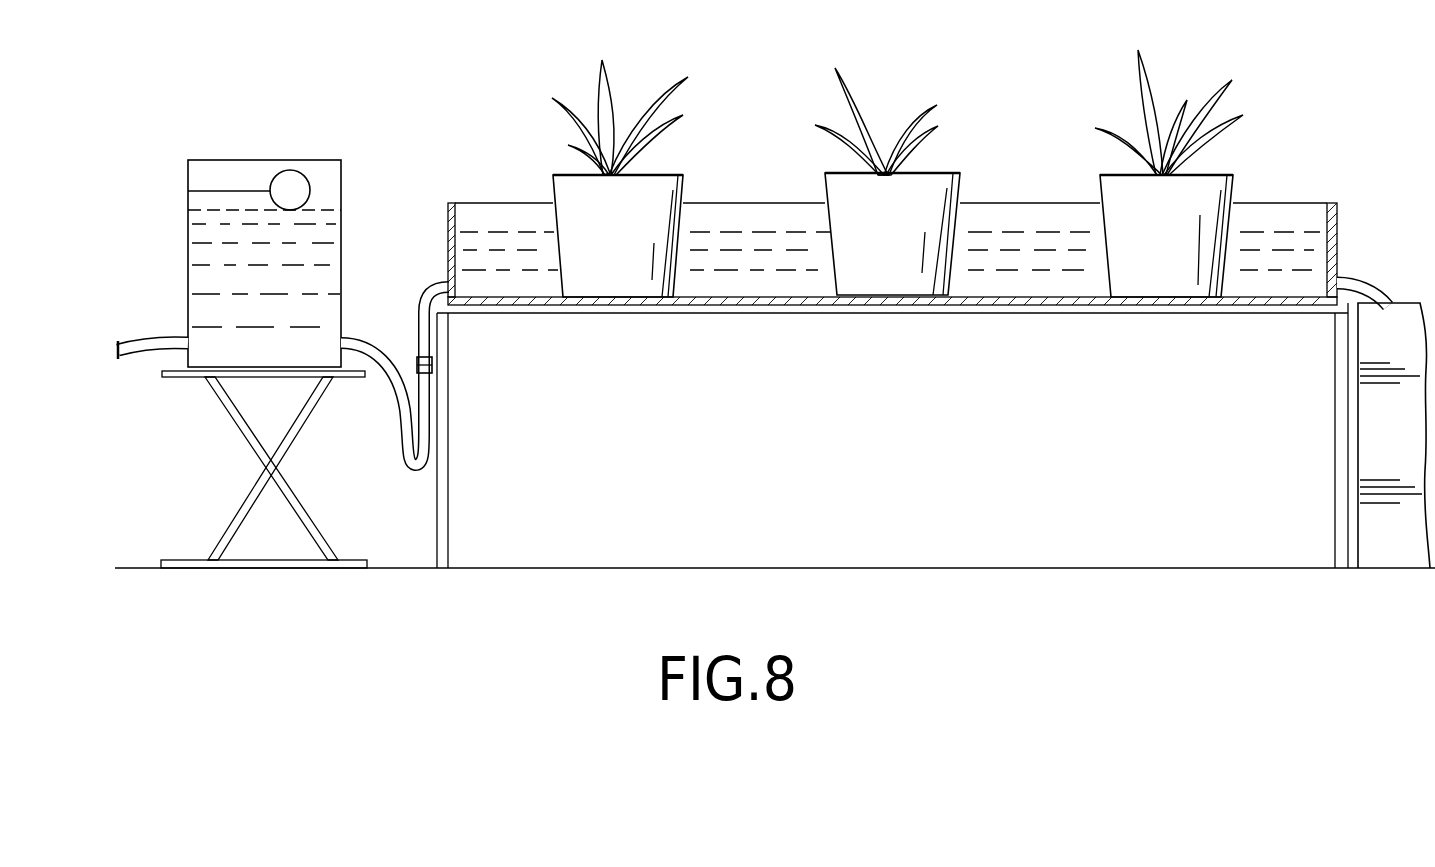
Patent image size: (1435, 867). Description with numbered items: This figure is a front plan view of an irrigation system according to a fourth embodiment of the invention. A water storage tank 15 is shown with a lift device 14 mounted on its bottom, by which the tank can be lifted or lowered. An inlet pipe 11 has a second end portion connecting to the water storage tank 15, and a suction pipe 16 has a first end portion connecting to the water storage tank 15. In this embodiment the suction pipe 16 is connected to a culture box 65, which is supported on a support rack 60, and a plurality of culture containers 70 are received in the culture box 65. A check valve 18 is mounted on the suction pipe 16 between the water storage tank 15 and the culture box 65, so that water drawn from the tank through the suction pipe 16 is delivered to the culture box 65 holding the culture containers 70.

The inlet pipe 11 is at (155, 338).
The lift device 14 is at (257, 452).
The water storage tank 15 is at (303, 172).
The first suction pipe 16 is at (387, 403).
The check valve 18 is at (417, 362).
The support rack 60 is at (677, 318).
The culture box 65 is at (448, 225).
The culture containers 70 is at (683, 187).